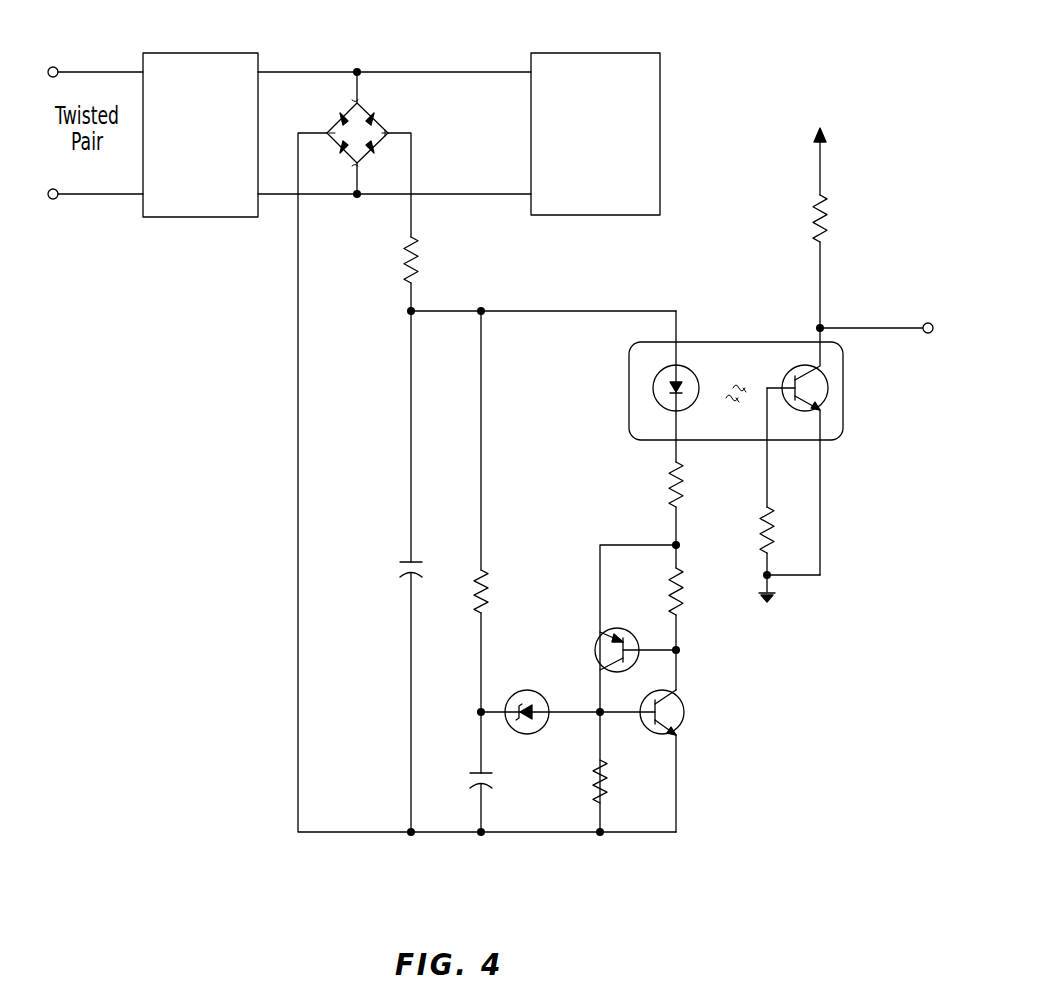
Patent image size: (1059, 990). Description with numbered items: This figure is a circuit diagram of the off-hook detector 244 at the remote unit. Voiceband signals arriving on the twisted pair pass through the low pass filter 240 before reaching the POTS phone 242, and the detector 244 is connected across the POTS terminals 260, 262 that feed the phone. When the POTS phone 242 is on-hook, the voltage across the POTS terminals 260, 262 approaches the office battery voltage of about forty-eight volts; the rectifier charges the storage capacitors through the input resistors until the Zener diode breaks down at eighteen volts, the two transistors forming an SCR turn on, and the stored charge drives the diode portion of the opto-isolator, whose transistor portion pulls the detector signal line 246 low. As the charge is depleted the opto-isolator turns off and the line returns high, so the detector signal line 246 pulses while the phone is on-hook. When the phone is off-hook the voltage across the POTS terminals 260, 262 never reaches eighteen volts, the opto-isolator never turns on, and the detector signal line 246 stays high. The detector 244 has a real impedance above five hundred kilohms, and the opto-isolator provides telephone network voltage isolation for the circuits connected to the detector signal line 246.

The low pass filter 240 is at (190, 218).
The POTS phone 242 is at (600, 216).
The off-hook detector 244 is at (238, 628).
The detector signal line 246 is at (888, 330).
The POTS terminal 260 is at (450, 72).
The POTS terminal 262 is at (472, 193).